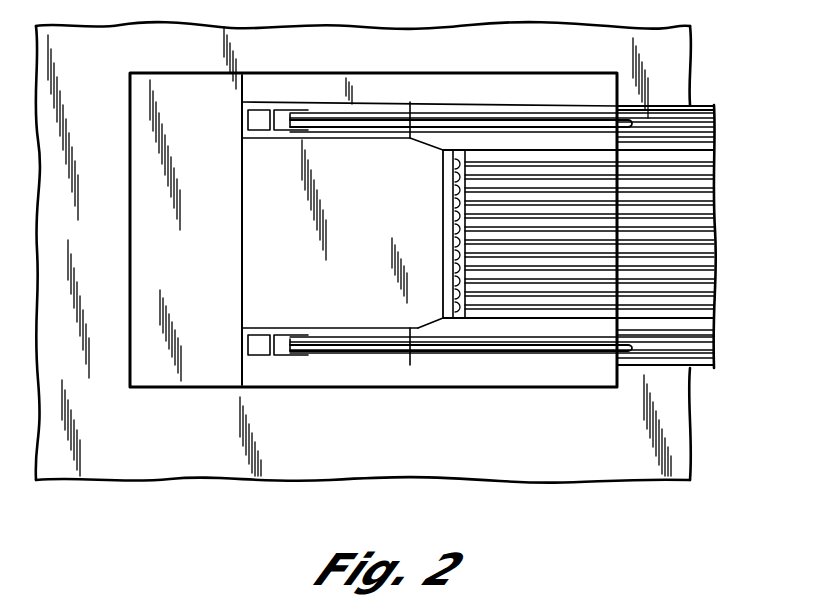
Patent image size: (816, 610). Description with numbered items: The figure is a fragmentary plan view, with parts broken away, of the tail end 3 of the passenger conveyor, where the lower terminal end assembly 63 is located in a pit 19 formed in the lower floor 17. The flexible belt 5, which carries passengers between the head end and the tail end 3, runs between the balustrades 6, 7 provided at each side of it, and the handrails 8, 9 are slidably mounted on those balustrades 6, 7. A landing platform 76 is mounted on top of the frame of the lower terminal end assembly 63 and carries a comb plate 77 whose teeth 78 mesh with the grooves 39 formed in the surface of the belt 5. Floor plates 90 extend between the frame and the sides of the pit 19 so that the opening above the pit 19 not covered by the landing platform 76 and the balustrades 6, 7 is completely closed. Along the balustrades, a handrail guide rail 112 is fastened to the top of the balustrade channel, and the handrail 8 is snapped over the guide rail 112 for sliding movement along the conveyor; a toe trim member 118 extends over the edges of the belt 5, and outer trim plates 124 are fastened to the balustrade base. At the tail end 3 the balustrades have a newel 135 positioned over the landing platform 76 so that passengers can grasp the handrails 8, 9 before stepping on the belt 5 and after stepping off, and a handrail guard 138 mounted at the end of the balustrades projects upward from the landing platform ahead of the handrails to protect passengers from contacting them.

The tail end 3 is at (703, 100).
The flexible belt 5 is at (698, 218).
The balustrade 6 is at (657, 117).
The balustrade 7 is at (638, 352).
The handrail 8 is at (483, 120).
The handrail 9 is at (483, 348).
The lower floor 17 is at (680, 456).
The pit 19 is at (154, 372).
The grooves 39 is at (705, 312).
The lower terminal end assembly 63 is at (429, 72).
The landing platform 76 is at (330, 233).
The comb plate 77 is at (455, 168).
The teeth 78 is at (460, 248).
The floor plates 90 is at (331, 60).
The handrail guide rail 112 is at (705, 128).
The toe trim member 118 is at (705, 143).
The outer trim plates 124 is at (705, 120).
The newel 135 is at (402, 118).
The handrail guard 138 is at (285, 117).